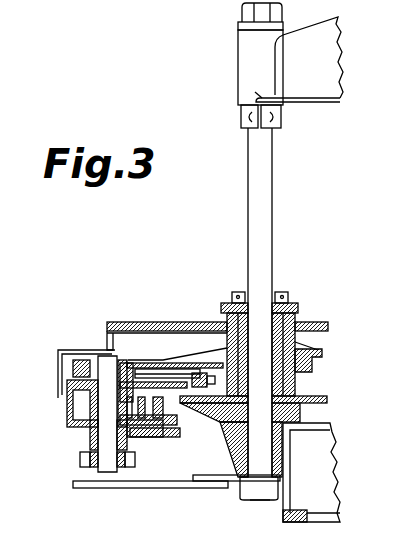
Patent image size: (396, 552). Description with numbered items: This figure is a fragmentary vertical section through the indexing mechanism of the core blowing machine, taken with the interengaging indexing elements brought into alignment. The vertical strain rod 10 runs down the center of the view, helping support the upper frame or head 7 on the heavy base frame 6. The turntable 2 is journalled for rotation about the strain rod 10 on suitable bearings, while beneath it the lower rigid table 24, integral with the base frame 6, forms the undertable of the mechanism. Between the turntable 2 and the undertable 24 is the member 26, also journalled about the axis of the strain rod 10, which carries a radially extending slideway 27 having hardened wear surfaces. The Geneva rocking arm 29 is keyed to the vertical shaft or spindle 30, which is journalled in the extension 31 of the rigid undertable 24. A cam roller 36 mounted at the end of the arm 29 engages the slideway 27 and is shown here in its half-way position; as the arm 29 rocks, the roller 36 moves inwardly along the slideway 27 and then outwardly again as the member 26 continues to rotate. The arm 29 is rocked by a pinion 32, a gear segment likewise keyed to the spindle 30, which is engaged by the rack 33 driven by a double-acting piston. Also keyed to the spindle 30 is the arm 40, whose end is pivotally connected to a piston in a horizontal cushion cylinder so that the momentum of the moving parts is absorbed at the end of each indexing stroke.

The turntable 2 is at (318, 325).
The base frame 6 is at (325, 485).
The upper frame or head 7 is at (245, 66).
The strain rod 10 is at (265, 185).
The lower rigid table 24 is at (328, 402).
The member having radial slideways 26 is at (322, 352).
The radial slideway 27 is at (147, 372).
The Geneva rocking arm 29 is at (164, 380).
The vertical shaft or spindle 30 is at (105, 462).
The extension 31 is at (92, 430).
The pinion 32 is at (133, 432).
The rack 33 is at (152, 433).
The cam roller 36 is at (187, 360).
The arm 40 is at (80, 459).